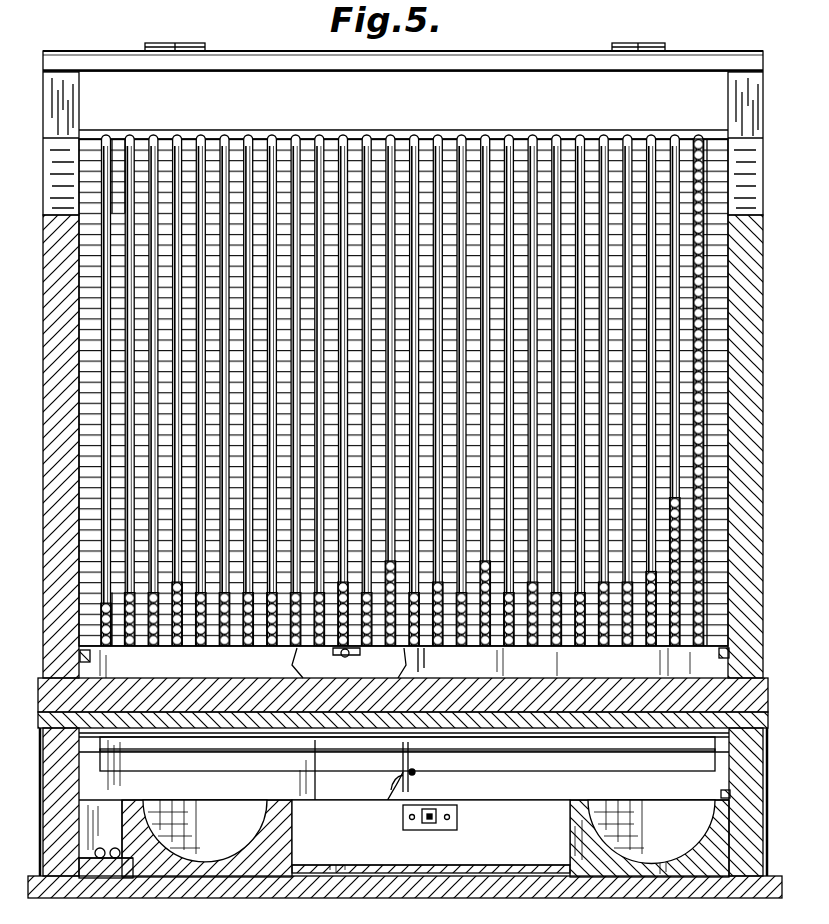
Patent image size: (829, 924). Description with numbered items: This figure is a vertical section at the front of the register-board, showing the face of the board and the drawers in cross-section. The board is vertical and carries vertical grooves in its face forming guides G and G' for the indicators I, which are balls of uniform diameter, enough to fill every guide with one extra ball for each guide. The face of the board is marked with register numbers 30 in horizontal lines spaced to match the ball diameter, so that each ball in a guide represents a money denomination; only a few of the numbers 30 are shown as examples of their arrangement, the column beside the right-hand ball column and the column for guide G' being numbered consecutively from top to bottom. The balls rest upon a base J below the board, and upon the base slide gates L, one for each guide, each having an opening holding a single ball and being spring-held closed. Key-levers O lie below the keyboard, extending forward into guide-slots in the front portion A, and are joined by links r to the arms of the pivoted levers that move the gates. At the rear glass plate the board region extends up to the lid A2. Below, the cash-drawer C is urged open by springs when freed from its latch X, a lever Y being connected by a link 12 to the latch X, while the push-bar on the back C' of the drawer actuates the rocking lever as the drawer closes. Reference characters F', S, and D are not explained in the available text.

The lid A2 is at (497, 56).
The guides G is at (400, 374).
The guide G' is at (57, 400).
The register numbers 30 is at (497, 138).
The front frame plate F' is at (434, 373).
The indicators I is at (698, 136).
The base J is at (349, 665).
The gates L is at (406, 653).
The key-levers O is at (511, 770).
The links r is at (229, 770).
The rail S is at (404, 765).
The front portion A is at (327, 770).
The link 12 is at (408, 793).
The lever Y is at (390, 804).
The latch X is at (430, 822).
The back of the cash-drawer C' is at (425, 838).
The ball receptacle D is at (80, 843).
The drawer C is at (429, 862).